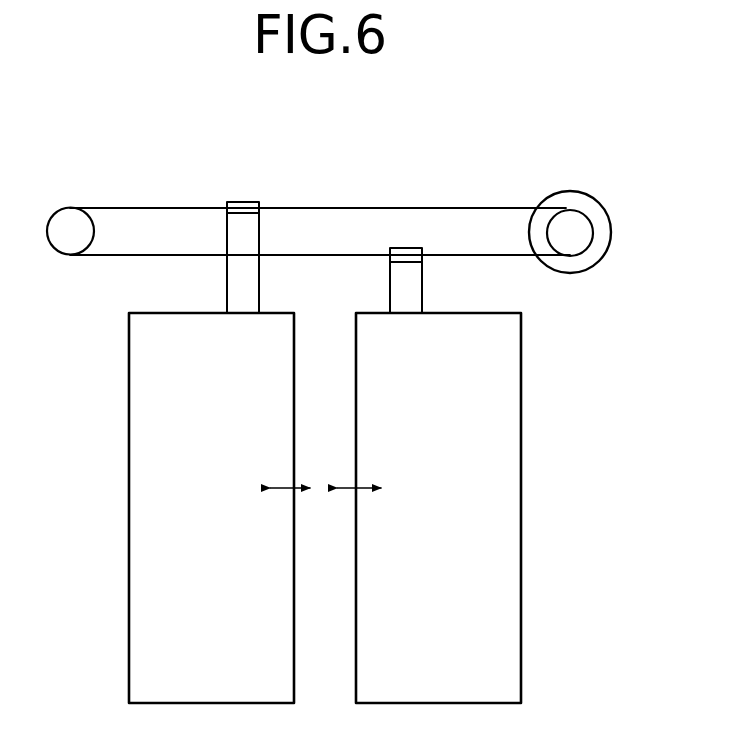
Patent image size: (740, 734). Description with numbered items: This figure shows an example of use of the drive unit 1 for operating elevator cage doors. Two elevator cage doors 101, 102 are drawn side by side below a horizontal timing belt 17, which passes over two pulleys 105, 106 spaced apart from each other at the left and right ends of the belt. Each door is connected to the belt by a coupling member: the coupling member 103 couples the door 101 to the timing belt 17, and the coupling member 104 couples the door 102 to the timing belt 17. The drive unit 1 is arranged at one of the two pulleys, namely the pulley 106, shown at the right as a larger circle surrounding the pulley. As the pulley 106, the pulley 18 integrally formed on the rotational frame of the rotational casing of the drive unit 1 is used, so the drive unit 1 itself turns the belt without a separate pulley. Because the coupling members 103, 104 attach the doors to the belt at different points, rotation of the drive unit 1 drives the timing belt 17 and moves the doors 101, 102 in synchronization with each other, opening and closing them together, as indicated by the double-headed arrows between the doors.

The drive unit 1 is at (590, 178).
The timing belt 17 is at (465, 208).
The pulley 18 is at (576, 240).
The elevator cage door 101 is at (128, 398).
The elevator cage door 102 is at (521, 410).
The coupling member 103 is at (241, 202).
The coupling member 104 is at (403, 248).
The pulley 105 is at (70, 221).
The pulley 106 is at (622, 258).